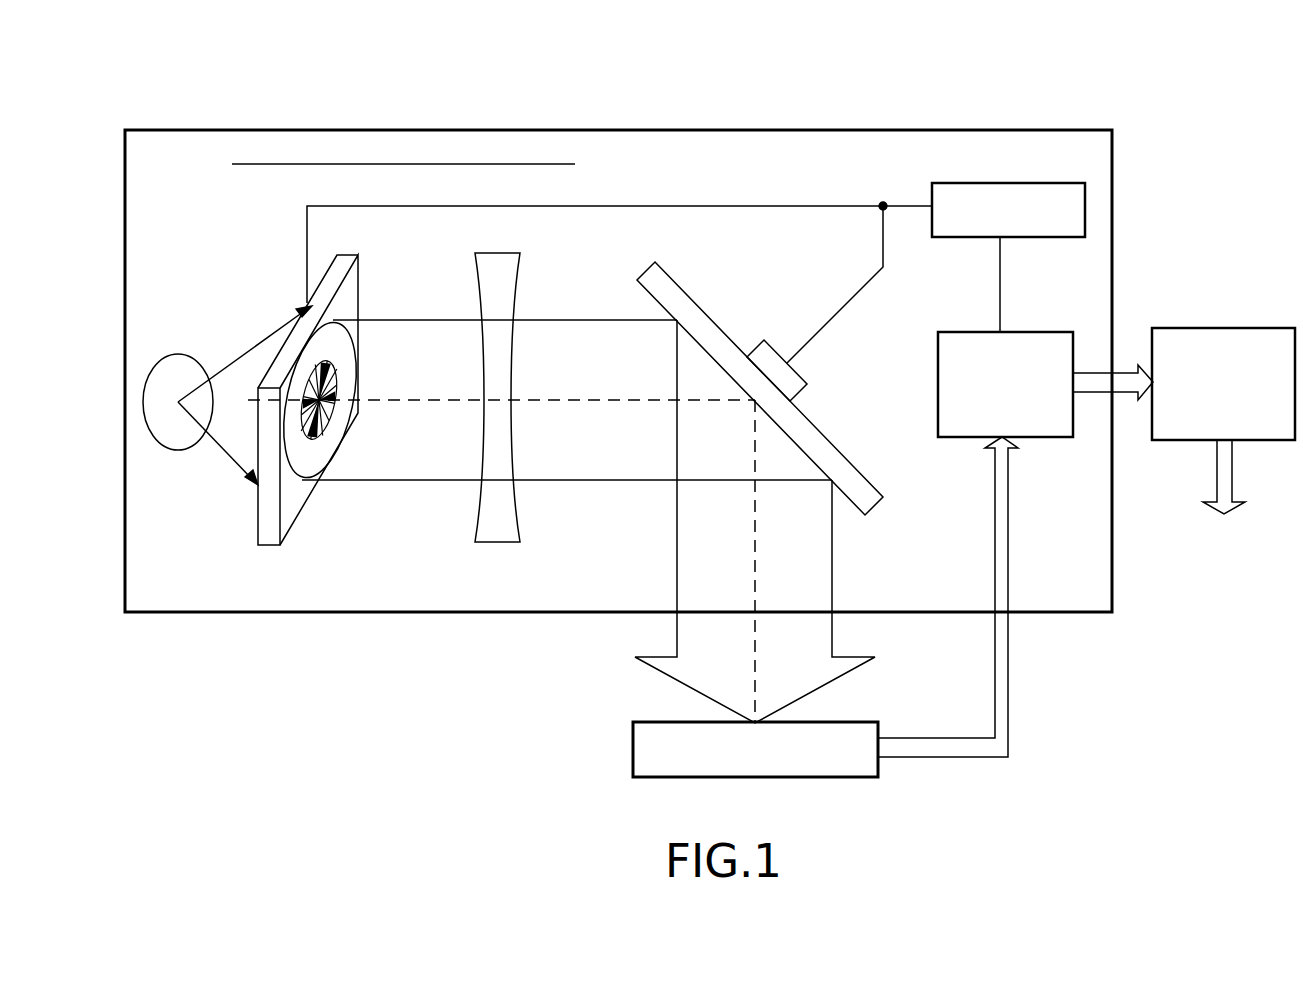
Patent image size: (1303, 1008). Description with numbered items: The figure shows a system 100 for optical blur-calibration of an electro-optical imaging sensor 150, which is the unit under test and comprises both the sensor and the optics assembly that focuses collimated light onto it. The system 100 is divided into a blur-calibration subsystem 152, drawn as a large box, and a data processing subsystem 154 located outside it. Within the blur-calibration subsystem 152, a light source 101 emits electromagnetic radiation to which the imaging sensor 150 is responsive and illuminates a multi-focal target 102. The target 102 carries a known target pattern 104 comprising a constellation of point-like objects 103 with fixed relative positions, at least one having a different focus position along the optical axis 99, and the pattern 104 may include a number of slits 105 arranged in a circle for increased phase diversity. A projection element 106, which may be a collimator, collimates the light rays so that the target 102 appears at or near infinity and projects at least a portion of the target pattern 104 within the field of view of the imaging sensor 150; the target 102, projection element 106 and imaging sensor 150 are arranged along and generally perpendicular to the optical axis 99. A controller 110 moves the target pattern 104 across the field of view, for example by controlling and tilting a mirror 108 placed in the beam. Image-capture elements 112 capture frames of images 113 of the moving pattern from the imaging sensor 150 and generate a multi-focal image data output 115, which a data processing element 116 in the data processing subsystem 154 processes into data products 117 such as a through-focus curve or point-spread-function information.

The system 100 is at (1195, 117).
The light source 101 is at (168, 358).
The multi-focal target 102 is at (327, 513).
The point-like objects 103 is at (323, 443).
The target pattern 104 is at (355, 297).
The slits 105 is at (335, 370).
The projection element 106 is at (498, 253).
The mirror 108 is at (687, 297).
The optical axis 99 is at (622, 398).
The controller 110 is at (1048, 183).
The image-capture elements 112 is at (1052, 332).
The frames of images 113 is at (1008, 675).
The multi-focal image data output 115 is at (1138, 365).
The data processing element 116 is at (1200, 280).
The data products 117 is at (1213, 470).
The imaging sensor 150 is at (643, 778).
The blur-calibration subsystem 152 is at (1074, 130).
The data processing subsystem 154 is at (1223, 315).